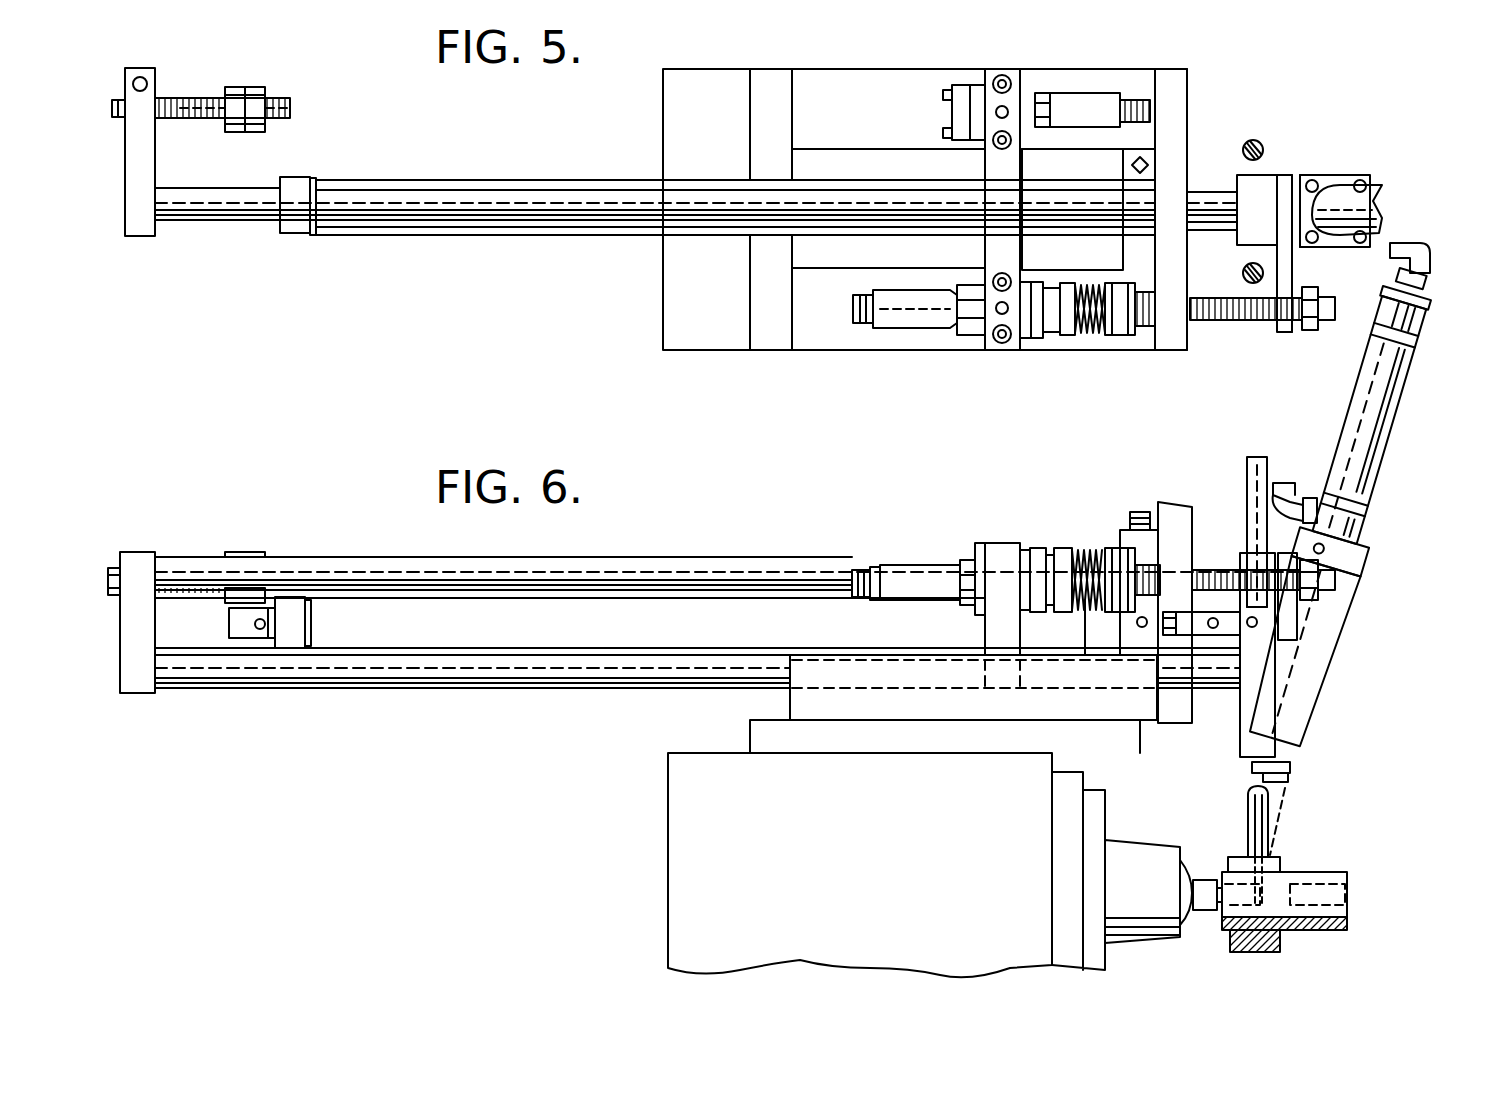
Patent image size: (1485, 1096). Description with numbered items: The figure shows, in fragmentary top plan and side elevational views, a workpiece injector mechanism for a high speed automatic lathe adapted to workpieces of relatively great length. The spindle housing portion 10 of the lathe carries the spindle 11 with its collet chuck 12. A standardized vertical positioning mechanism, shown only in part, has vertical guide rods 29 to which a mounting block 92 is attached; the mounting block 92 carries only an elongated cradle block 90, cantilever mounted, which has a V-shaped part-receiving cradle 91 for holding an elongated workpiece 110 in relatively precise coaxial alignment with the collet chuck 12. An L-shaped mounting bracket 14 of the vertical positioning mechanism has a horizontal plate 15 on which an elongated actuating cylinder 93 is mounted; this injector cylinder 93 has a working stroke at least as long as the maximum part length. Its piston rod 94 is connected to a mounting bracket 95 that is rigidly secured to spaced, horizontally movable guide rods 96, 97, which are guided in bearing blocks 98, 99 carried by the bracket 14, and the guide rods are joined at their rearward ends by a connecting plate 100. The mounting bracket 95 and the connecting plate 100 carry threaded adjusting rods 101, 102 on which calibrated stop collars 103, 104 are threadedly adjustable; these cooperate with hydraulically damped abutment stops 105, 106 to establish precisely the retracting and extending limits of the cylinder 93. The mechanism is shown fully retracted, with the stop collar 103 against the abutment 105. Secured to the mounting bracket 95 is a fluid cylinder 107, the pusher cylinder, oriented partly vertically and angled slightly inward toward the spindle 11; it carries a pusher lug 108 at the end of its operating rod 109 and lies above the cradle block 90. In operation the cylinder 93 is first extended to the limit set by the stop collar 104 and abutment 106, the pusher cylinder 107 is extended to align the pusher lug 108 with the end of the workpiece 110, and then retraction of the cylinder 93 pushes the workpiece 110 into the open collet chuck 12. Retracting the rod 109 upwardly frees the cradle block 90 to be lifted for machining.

In FIG. 6, the spindle housing portion 10 is at (1002, 875).
In FIG. 6, the spindle 11 is at (1128, 847).
In FIG. 6, the collet chuck 12 is at (1178, 888).
In FIG. 5, the L-shaped mounting bracket 14 is at (830, 335).
In FIG. 6, the L-shaped mounting bracket 14 is at (973, 667).
In FIG. 6, the horizontal plate 15 is at (922, 678).
In FIG. 6, the vertical guide rods 29 is at (1252, 790).
In FIG. 6, the cradle block 90 is at (1330, 930).
In FIG. 6, the V-shaped part-receiving cradle 91 is at (1347, 877).
In FIG. 6, the mounting block 92 is at (1280, 863).
In FIG. 5, the actuating cylinder 93 is at (505, 185).
In FIG. 6, the actuating cylinder 93 is at (760, 622).
In FIG. 6, the piston rod 94 is at (1183, 632).
In FIG. 6, the mounting bracket 95 is at (1268, 668).
In FIG. 6, the guide rod 96 is at (678, 565).
In FIG. 6, the guide rod 97 is at (462, 688).
In FIG. 5, the bearing block 98 is at (1125, 246).
In FIG. 5, the bearing block 99 is at (993, 247).
In FIG. 5, the connecting plate 100 is at (150, 160).
In FIG. 6, the connecting plate 100 is at (140, 552).
In FIG. 5, the threaded adjusting rod 101 is at (1228, 320).
In FIG. 5, the threaded adjusting rod 102 is at (180, 98).
In FIG. 5, the stop collar 103 is at (1060, 338).
In FIG. 5, the stop collar 104 is at (255, 132).
In FIG. 5, the hydraulically damped abutment stop 105 is at (1022, 340).
In FIG. 5, the hydraulically damped abutment stop 106 is at (968, 85).
In FIG. 6, the fluid cylinder 107 is at (1395, 430).
In FIG. 6, the pusher lug 108 is at (1290, 766).
In FIG. 6, the operating rod 109 is at (1282, 806).
In FIG. 6, the workpiece 110 is at (1203, 880).